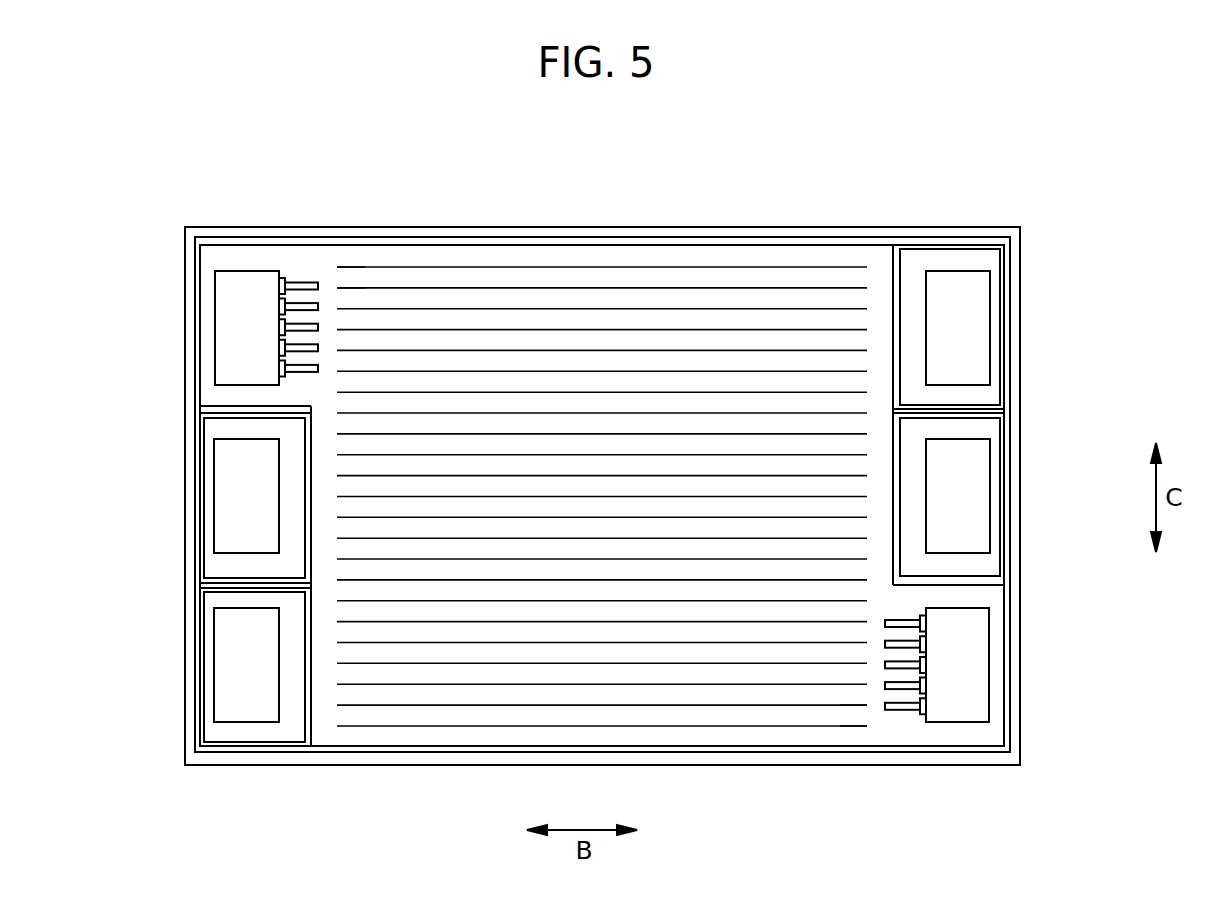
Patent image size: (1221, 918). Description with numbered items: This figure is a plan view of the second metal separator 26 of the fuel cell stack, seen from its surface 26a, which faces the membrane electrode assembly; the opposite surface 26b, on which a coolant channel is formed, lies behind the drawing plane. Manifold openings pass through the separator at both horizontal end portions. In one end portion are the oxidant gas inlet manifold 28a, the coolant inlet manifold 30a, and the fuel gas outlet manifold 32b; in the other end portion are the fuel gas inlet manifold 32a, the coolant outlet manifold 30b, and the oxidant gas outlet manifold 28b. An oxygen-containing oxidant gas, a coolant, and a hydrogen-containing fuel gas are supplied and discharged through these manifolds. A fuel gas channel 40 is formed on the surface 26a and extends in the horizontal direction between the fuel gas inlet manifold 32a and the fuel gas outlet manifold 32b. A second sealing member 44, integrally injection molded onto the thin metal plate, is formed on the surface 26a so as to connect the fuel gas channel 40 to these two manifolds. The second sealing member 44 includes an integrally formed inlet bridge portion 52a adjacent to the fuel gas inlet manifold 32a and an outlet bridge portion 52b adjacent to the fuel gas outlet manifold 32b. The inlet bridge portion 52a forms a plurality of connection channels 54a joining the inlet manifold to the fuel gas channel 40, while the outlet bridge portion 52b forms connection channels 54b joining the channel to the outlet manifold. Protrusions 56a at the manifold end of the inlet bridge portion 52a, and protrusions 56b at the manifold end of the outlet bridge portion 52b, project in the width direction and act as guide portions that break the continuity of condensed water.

The second metal separator 26 is at (589, 127).
The surface 26a is at (698, 738).
The surface 26b is at (745, 738).
The oxidant gas inlet manifold 28a is at (965, 290).
The oxidant gas outlet manifold 28b is at (245, 627).
The coolant inlet manifold 30a is at (979, 465).
The coolant outlet manifold 30b is at (223, 456).
The fuel gas inlet manifold 32a is at (245, 290).
The fuel gas outlet manifold 32b is at (965, 625).
The fuel gas channel 40 is at (456, 677).
The second sealing member 44 is at (748, 244).
The inlet bridge portion 52a is at (330, 293).
The outlet bridge portion 52b is at (878, 698).
The connection channels 54a is at (304, 296).
The connection channels 54b is at (902, 696).
The protrusions 56a is at (283, 280).
The protrusions 56b is at (922, 716).